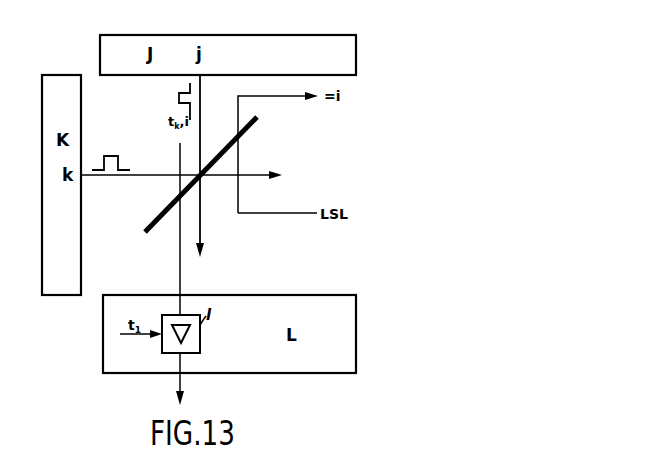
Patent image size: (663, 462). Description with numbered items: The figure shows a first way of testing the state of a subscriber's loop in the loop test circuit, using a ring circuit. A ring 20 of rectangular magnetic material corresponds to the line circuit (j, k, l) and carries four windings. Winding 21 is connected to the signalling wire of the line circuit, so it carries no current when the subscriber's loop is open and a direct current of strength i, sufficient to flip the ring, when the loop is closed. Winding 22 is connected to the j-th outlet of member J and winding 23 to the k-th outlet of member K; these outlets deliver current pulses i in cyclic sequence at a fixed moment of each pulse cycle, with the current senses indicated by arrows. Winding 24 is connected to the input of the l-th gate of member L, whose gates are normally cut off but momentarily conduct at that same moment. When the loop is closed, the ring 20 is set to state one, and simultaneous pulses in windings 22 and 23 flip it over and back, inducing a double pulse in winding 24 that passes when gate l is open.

The ring 20 is at (252, 128).
The winding 21 is at (238, 197).
The winding 22 is at (200, 130).
The winding 23 is at (104, 177).
The winding 24 is at (169, 274).